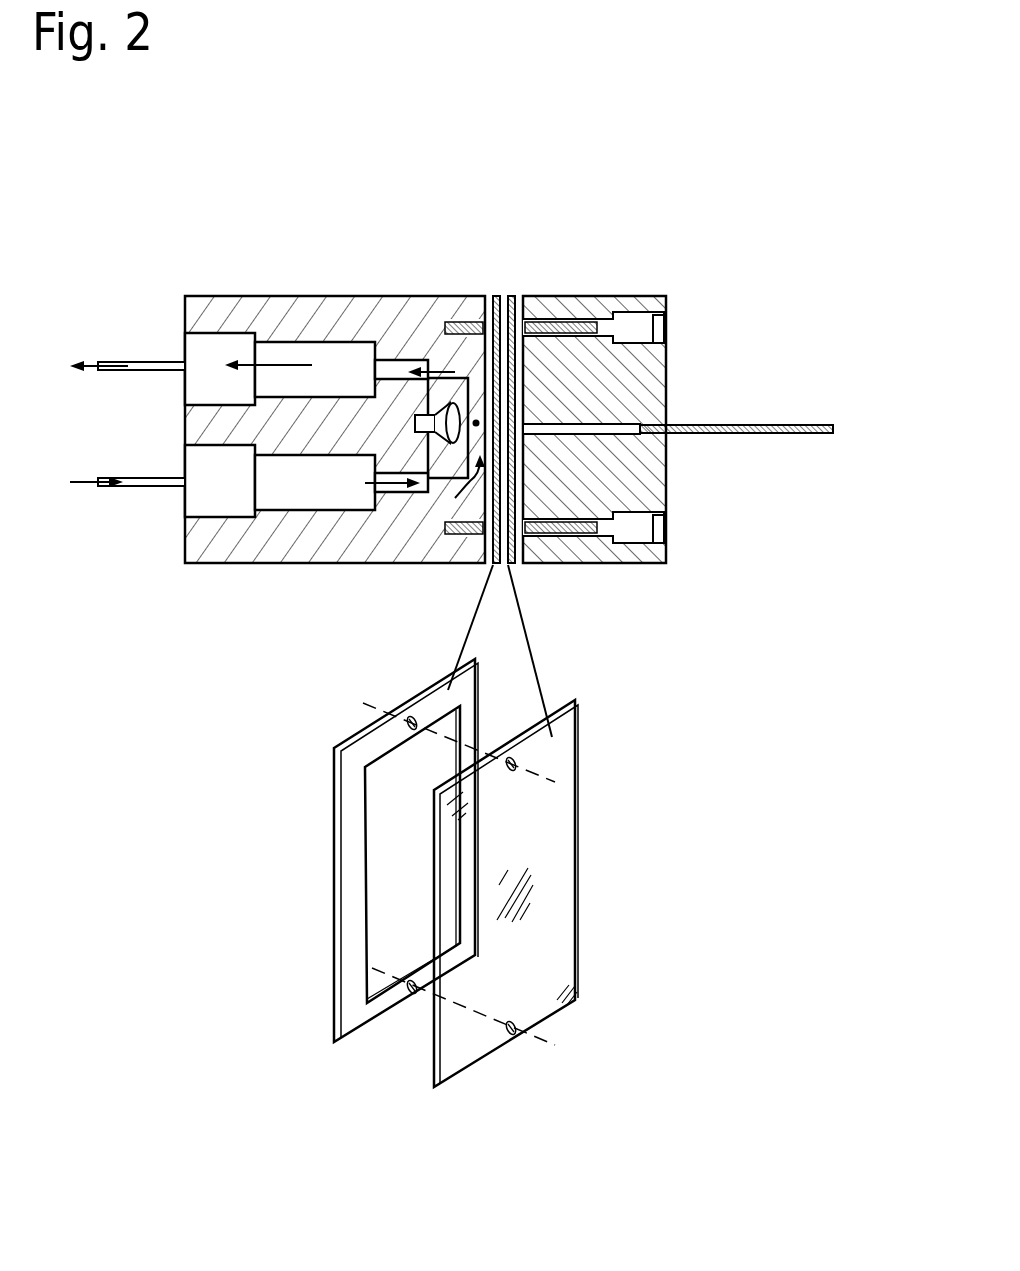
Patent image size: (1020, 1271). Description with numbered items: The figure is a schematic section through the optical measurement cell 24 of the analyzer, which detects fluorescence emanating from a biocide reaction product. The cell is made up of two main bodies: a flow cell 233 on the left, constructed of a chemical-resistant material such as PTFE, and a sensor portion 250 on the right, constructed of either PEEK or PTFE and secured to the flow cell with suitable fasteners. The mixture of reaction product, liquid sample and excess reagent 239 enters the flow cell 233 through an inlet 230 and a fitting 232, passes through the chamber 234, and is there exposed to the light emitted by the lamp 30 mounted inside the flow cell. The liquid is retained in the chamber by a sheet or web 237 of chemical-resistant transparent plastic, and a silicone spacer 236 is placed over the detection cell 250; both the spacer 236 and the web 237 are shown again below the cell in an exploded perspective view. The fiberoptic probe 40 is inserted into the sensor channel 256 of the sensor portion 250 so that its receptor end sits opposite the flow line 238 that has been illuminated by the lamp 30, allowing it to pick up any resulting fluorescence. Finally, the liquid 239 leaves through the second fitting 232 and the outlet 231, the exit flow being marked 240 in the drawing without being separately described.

The optical measurement cell 24 is at (513, 158).
The lamp 30 is at (415, 423).
The fiberoptic probe 40 is at (808, 428).
The inlet 230 is at (142, 487).
The outlet 231 is at (145, 362).
The fitting 232 is at (290, 342).
The flow cell 233 is at (313, 297).
The chamber 234 is at (455, 498).
The silicone spacer 236 is at (493, 297).
The sheet or web 237 is at (513, 297).
The flow line 238 is at (476, 423).
The mixture of reaction product, liquid sample and excess reagent 239 is at (88, 486).
The outlet flow 240 is at (91, 362).
The sensor portion 250 is at (598, 297).
The sensor channel 256 is at (615, 432).